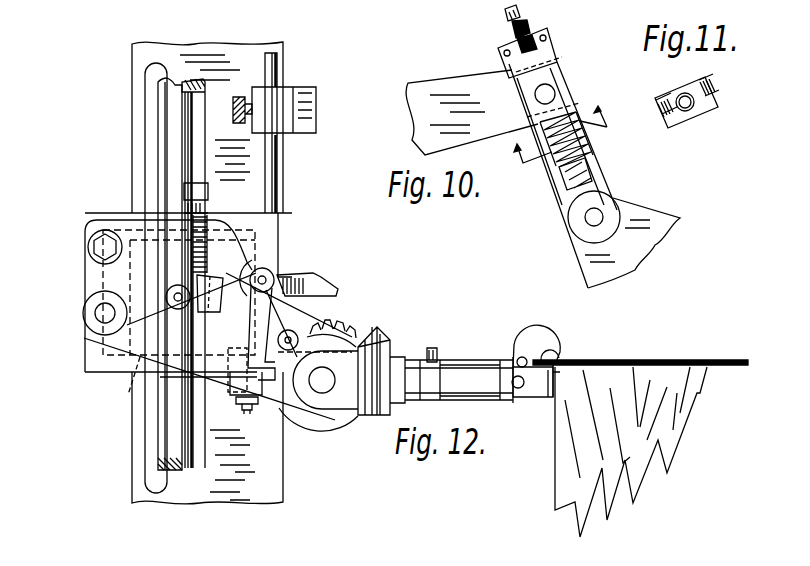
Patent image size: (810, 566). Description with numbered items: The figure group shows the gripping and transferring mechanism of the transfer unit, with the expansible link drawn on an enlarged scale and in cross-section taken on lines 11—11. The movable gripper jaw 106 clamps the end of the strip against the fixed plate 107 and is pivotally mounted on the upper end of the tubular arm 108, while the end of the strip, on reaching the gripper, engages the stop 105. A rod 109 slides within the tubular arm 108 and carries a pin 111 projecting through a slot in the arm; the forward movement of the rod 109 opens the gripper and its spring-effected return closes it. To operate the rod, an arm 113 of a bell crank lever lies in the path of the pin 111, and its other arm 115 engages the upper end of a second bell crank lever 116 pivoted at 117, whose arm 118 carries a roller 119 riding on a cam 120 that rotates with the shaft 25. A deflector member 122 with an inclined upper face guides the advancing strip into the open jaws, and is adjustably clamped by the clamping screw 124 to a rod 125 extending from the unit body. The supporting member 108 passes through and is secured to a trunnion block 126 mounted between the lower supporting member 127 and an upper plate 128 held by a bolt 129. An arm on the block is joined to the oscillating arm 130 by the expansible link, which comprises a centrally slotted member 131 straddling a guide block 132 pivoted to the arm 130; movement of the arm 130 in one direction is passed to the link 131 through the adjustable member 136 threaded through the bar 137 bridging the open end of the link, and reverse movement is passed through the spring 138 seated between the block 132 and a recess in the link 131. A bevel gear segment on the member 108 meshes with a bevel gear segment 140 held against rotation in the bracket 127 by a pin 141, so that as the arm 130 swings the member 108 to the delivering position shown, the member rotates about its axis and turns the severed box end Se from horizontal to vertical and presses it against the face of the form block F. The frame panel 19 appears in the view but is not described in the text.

In FIG. 12, the frame panel 19 is at (140, 67).
In FIG. 12, the shaft 25 is at (175, 117).
In FIG. 12, the stop 105 is at (556, 356).
In FIG. 12, the movable gripper jaw 106 is at (542, 338).
In FIG. 12, the fixed plate 107 is at (558, 367).
In FIG. 12, the tubular arm 108 is at (470, 360).
In FIG. 12, the rod 109 is at (523, 390).
In FIG. 12, the pin 111 is at (433, 350).
In FIG. 12, the arm of bell crank lever 113 is at (315, 275).
In FIG. 12, the arm of bell crank lever 115 is at (247, 322).
In FIG. 12, the second bell crank lever 116 is at (232, 400).
In FIG. 12, the pivot 117 is at (253, 408).
In FIG. 12, the arm 118 is at (198, 385).
In FIG. 12, the roller 119 is at (140, 392).
In FIG. 12, the cam 120 is at (132, 342).
In FIG. 12, the deflector member 122 is at (285, 98).
In FIG. 12, the clamping screw 124 is at (240, 97).
In FIG. 12, the rod 125 is at (270, 68).
In FIG. 12, the trunnion block 126 is at (345, 432).
In FIG. 10, the trunnion block 126 is at (590, 247).
In FIG. 12, the lower supporting member 127 is at (322, 313).
In FIG. 12, the upper plate 128 is at (133, 343).
In FIG. 12, the bolt 129 is at (95, 248).
In FIG. 12, the oscillating arm 130 is at (143, 300).
In FIG. 10, the oscillating arm 130 is at (438, 88).
In FIG. 12, the centrally slotted member 131 is at (303, 312).
In FIG. 10, the centrally slotted member 131 is at (602, 163).
In FIG. 11, the centrally slotted member 131 is at (720, 91).
In FIG. 10, the guide block 132 is at (555, 73).
In FIG. 11, the guide block 132 is at (697, 115).
In FIG. 10, the adjustable member 136 is at (528, 24).
In FIG. 10, the bar 137 is at (505, 42).
In FIG. 10, the spring 138 is at (570, 180).
In FIG. 12, the bevel gear segment 140 is at (380, 340).
In FIG. 12, the pin 141 is at (345, 335).
In FIG. 10, the section line 11- 11 is at (555, 126).
In FIG. 12, the box component Se is at (612, 360).
In FIG. 12, the form block F is at (566, 471).